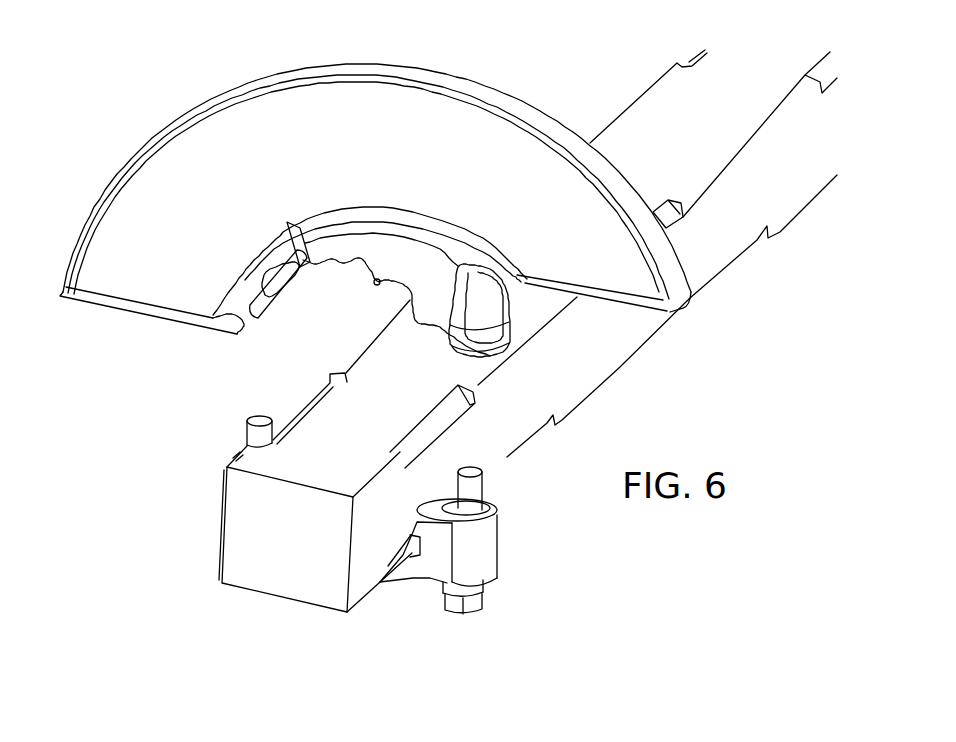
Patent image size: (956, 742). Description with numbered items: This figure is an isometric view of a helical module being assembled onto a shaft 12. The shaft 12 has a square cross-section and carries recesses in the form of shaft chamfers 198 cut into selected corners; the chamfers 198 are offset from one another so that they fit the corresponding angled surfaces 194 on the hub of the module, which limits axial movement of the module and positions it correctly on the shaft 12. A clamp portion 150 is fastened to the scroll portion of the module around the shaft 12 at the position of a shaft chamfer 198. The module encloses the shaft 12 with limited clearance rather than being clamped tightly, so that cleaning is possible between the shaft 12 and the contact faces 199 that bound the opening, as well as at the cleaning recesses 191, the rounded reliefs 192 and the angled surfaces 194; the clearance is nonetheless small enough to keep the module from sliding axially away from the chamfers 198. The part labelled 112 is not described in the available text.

The shaft 12 is at (315, 539).
The shell / cover 112 is at (375, 187).
The clamp portion 150 is at (432, 563).
The cleaning recess 191 is at (325, 258).
The rounded relief 192 is at (410, 572).
The angled surface 194 is at (394, 303).
The shaft chamfer 198 is at (324, 411).
The contact face 199 is at (299, 225).